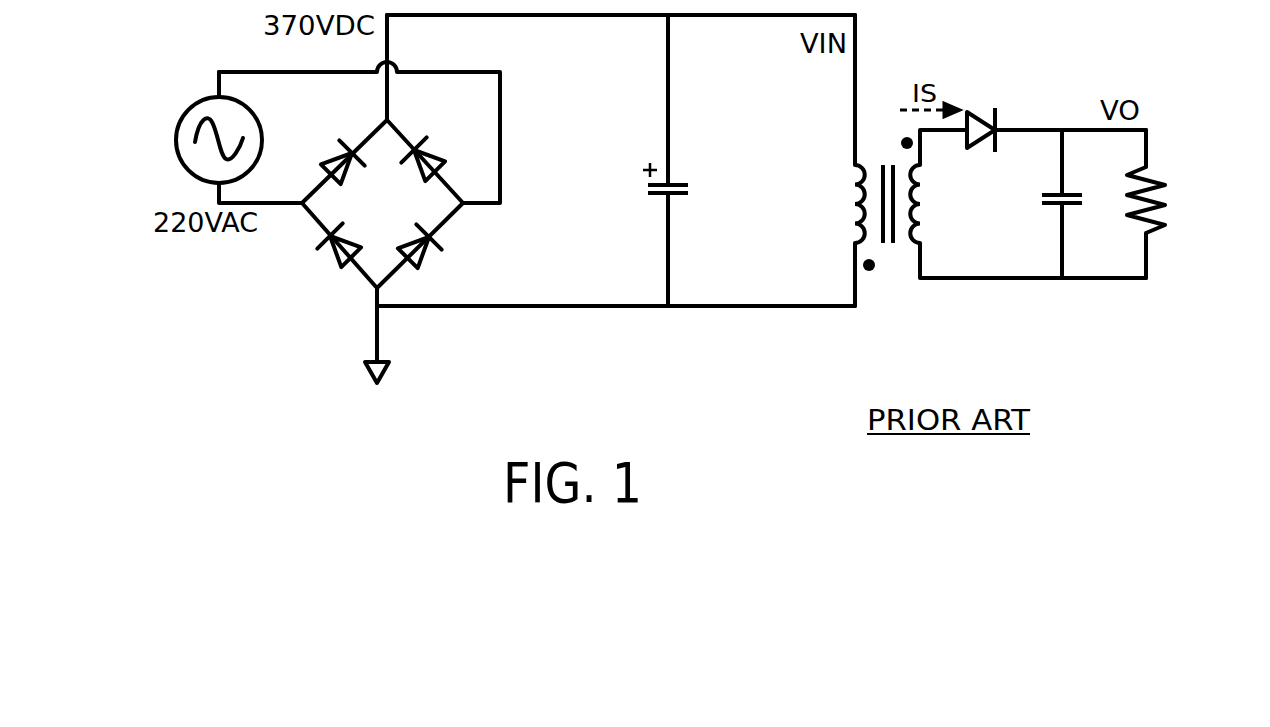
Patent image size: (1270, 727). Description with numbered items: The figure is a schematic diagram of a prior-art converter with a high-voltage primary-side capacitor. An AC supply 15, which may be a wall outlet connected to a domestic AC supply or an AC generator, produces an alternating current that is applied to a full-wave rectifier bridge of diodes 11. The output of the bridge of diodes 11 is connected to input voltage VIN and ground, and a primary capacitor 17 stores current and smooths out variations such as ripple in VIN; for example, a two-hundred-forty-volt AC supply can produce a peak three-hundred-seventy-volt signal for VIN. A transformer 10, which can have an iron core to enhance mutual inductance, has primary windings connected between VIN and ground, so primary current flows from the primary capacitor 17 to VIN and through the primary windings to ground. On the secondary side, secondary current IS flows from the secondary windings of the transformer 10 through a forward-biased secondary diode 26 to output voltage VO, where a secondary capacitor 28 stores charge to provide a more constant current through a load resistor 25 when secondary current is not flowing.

The transformer 10 is at (917, 222).
The diodes 11 is at (335, 155).
The AC supply 15 is at (188, 106).
The primary capacitor 17 is at (650, 197).
The load resistor 25 is at (1163, 178).
The secondary diode 26 is at (979, 109).
The secondary capacitor 28 is at (1041, 203).